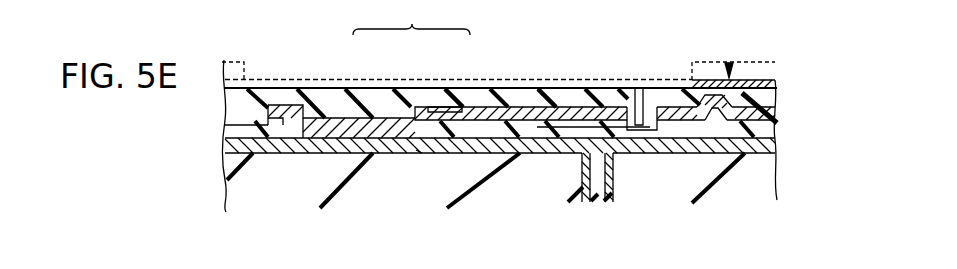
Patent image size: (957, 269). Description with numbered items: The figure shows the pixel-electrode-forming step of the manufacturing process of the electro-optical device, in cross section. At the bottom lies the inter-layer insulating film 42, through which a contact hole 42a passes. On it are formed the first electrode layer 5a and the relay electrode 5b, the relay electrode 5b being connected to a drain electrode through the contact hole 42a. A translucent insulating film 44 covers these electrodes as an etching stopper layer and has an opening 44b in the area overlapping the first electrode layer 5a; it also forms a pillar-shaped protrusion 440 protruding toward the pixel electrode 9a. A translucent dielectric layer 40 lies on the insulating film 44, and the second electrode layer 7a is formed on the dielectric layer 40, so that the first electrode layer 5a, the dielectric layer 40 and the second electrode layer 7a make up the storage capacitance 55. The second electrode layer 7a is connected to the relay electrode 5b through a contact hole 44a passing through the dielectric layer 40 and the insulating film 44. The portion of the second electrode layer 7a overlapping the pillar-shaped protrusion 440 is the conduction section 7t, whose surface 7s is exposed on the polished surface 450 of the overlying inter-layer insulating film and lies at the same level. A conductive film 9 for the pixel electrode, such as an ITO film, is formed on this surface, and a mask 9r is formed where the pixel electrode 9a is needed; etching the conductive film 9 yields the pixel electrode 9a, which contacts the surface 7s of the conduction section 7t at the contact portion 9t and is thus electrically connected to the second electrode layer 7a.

The inter-layer insulating film 42 is at (770, 189).
The contact hole 42a is at (603, 177).
The insulating film 44 is at (272, 130).
The contact hole 44a is at (639, 88).
The opening 44b is at (418, 153).
The pillar-shaped protrusion 440 is at (772, 103).
The surface of the inter-layer insulating film 450 is at (533, 88).
The first electrode layer 5a is at (384, 136).
The relay electrode 5b is at (642, 147).
The dielectric layer 40 is at (442, 120).
The second electrode layer 7a is at (467, 107).
The surface of the conduction section 7s is at (700, 84).
The conduction section 7t is at (733, 93).
The storage capacitance 55 is at (411, 60).
The conductive film for the pixel electrode 9 is at (495, 79).
The pixel electrode 9a is at (233, 85).
The mask 9r is at (697, 62).
The contact portion 9t is at (729, 63).